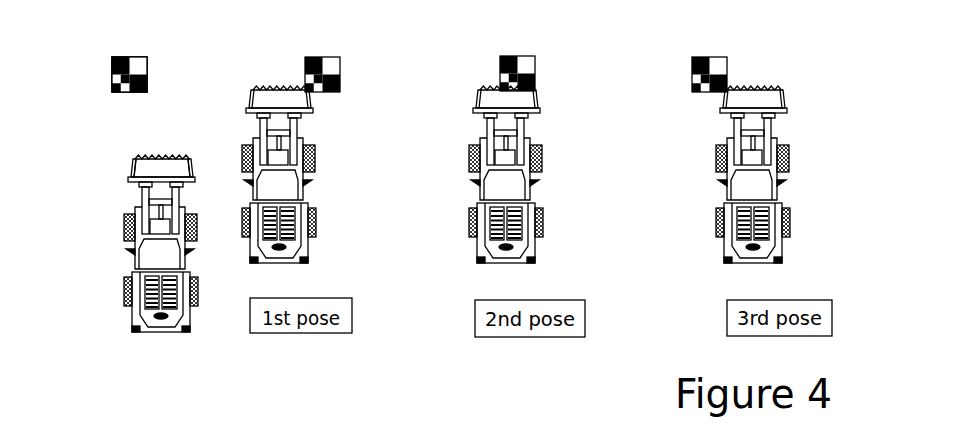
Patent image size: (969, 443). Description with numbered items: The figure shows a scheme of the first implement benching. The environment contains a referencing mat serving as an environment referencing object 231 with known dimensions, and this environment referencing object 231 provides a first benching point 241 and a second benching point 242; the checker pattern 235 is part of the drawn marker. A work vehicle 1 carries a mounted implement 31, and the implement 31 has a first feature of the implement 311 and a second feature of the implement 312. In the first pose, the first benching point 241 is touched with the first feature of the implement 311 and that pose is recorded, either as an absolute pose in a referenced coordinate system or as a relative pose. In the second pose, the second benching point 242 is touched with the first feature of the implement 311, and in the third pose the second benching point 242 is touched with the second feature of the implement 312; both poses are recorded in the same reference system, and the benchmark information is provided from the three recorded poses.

The work vehicle 1 is at (143, 220).
The implement 31 is at (171, 148).
The first feature of the implement 311 is at (192, 160).
The second feature of the implement 312 is at (136, 161).
The environment referencing object 231 is at (104, 39).
The checker pattern 235 is at (147, 89).
The first benching point 241 is at (112, 90).
The second benching point 242 is at (536, 91).